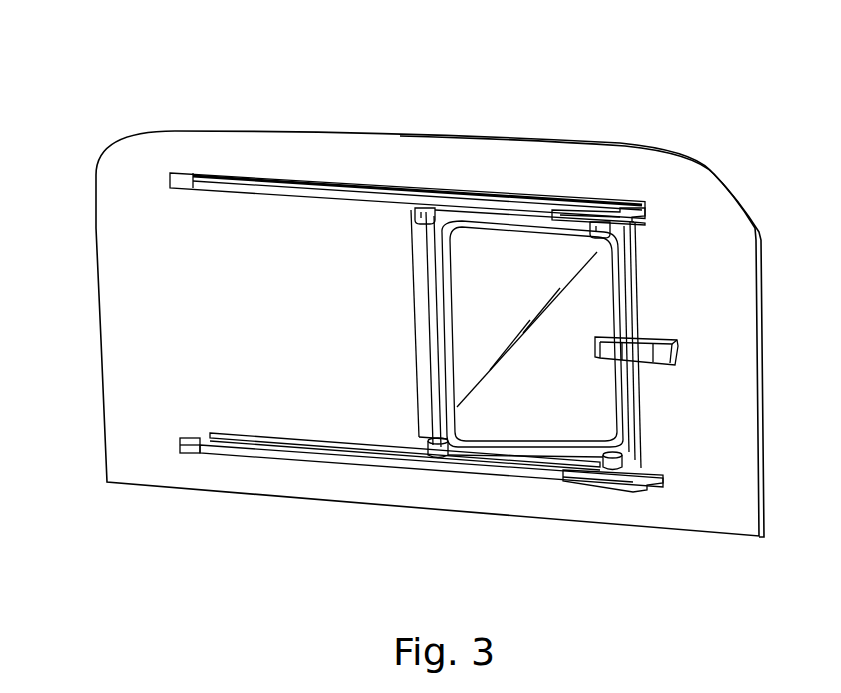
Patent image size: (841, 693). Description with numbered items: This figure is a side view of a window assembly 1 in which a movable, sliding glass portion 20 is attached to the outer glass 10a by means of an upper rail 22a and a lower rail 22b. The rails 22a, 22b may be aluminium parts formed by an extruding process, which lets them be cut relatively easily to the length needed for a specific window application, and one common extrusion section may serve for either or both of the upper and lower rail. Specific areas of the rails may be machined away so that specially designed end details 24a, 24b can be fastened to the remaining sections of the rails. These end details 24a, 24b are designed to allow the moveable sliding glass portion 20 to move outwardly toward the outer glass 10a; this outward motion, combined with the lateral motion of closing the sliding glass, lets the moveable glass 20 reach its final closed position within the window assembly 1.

The window assembly 1 is at (357, 118).
The outer glass 10a is at (707, 205).
The movable sliding glass portion 20 is at (580, 397).
The upper rail 22a is at (202, 171).
The lower rail 22b is at (197, 437).
The end detail 24a is at (560, 215).
The end detail 24b is at (447, 458).